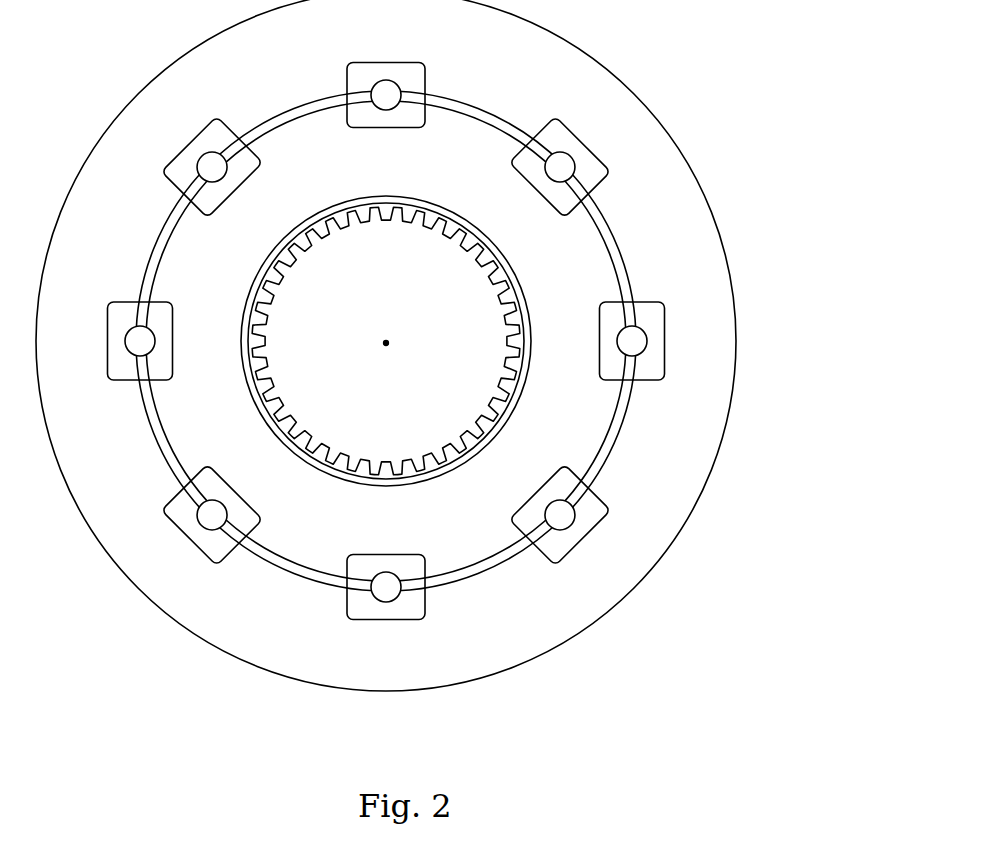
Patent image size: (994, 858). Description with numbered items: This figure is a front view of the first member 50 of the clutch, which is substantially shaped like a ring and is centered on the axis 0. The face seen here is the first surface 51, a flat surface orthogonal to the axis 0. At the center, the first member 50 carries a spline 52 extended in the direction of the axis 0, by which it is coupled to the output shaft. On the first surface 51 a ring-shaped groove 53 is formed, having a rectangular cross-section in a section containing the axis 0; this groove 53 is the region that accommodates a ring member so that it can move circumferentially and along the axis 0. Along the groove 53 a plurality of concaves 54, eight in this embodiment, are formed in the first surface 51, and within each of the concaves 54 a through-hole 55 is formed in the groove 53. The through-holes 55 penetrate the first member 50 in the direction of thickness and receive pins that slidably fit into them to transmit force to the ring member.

The first member 50 is at (441, 345).
The first surface 51 is at (675, 453).
The spline 52 is at (402, 213).
The ring-shaped groove 53 is at (478, 570).
The concaves 54 is at (600, 316).
The through-holes 55 is at (640, 325).
The axis 0 is at (389, 340).